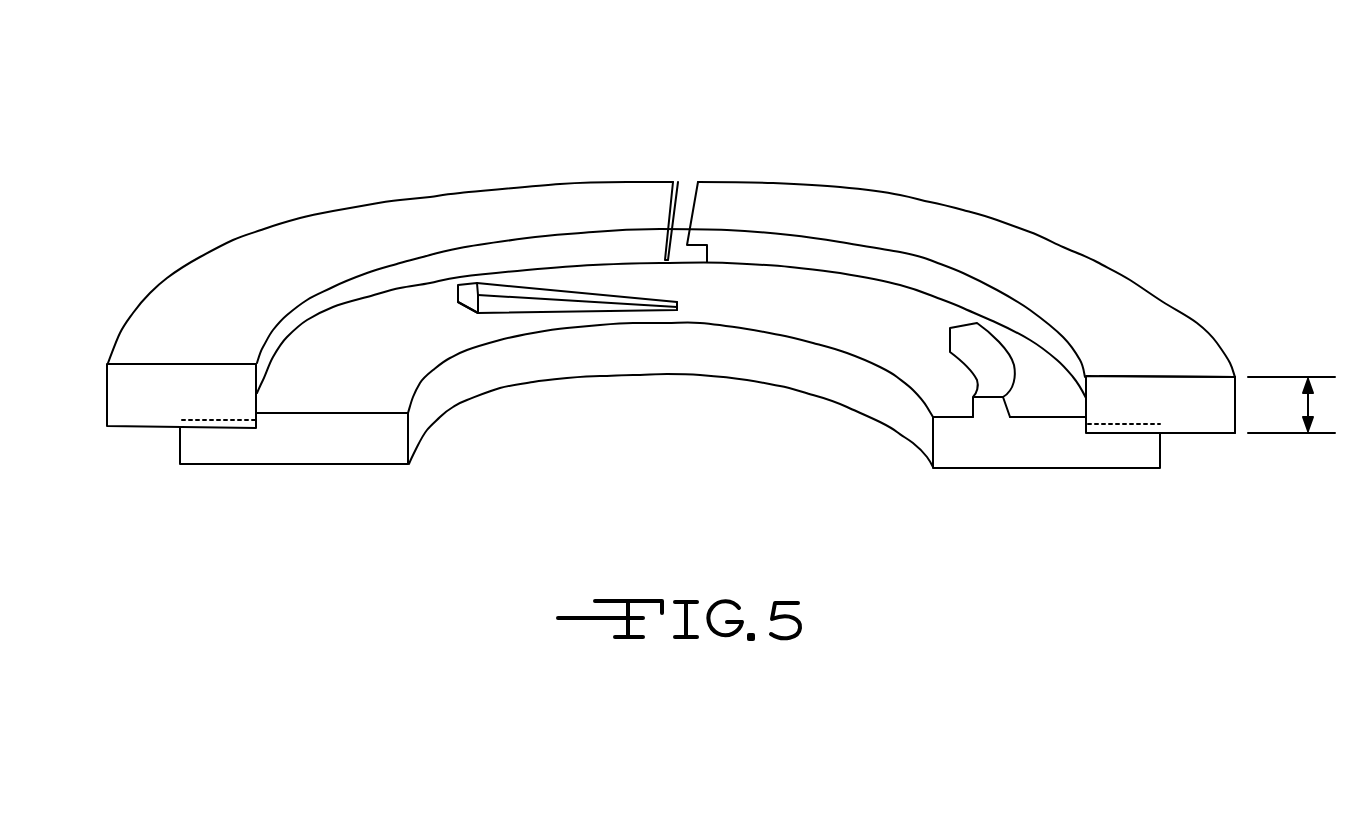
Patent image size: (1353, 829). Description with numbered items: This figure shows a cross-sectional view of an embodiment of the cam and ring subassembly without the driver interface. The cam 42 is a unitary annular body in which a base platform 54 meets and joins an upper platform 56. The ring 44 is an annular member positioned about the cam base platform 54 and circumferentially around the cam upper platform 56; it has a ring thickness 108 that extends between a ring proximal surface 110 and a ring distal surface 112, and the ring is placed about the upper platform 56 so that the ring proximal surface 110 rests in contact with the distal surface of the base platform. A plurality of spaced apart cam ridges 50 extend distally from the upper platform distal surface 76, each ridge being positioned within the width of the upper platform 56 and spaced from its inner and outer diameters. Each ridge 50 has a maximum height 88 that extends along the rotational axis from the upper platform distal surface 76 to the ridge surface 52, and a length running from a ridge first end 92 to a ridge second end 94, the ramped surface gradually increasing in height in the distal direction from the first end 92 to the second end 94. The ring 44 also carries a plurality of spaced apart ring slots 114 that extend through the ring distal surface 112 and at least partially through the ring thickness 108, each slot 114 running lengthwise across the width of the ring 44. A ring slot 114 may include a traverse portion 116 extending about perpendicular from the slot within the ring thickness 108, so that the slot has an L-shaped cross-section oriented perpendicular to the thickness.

The cam 42 is at (678, 352).
The ring 44 is at (1118, 275).
The cam ridge 50 is at (706, 247).
The ridge surface 52 is at (563, 280).
The base platform 54 is at (207, 437).
The upper platform 56 is at (310, 447).
The upper platform distal surface 76 is at (852, 326).
The maximum height 88 is at (503, 302).
The ridge first end 92 is at (659, 302).
The ridge second end 94 is at (467, 284).
The ring thickness 108 is at (1307, 377).
The ring proximal surface 110 is at (1202, 436).
The ring distal surface 112 is at (1177, 367).
The ring slot 114 is at (682, 212).
The traverse portion 116 is at (693, 257).